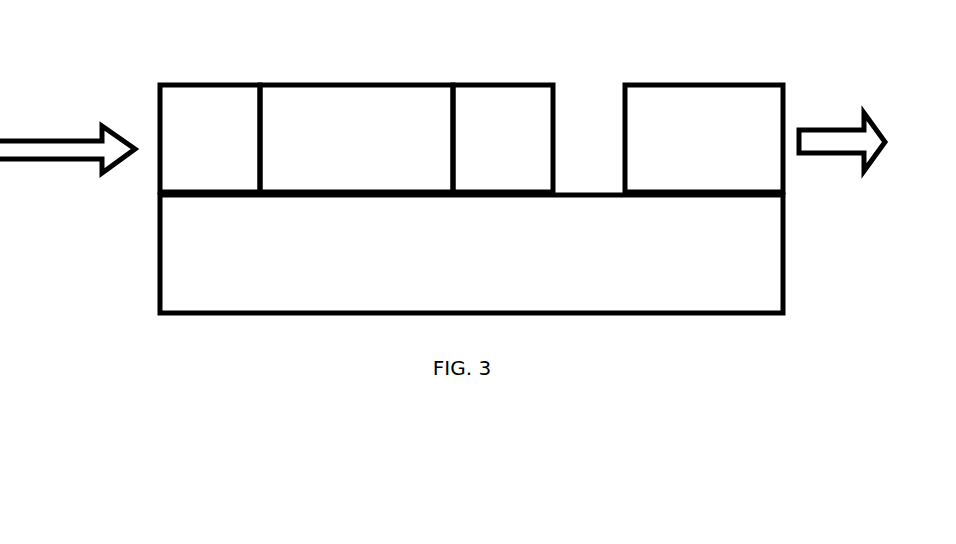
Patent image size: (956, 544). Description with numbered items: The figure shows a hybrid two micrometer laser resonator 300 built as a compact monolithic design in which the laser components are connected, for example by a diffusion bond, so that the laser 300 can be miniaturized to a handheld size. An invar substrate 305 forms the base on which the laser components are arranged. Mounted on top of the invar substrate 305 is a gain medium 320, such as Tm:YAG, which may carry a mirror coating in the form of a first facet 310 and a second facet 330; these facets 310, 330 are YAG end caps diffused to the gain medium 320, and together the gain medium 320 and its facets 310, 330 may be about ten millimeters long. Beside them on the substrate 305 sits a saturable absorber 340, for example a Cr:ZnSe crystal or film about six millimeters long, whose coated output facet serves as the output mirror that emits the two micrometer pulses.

The hybrid 2 µm laser resonator 300 is at (140, 90).
The invar substrate 305 is at (473, 281).
The first facet 310 is at (194, 180).
The gain medium 320 is at (334, 181).
The second facet 330 is at (489, 181).
The saturable absorber 340 is at (683, 180).